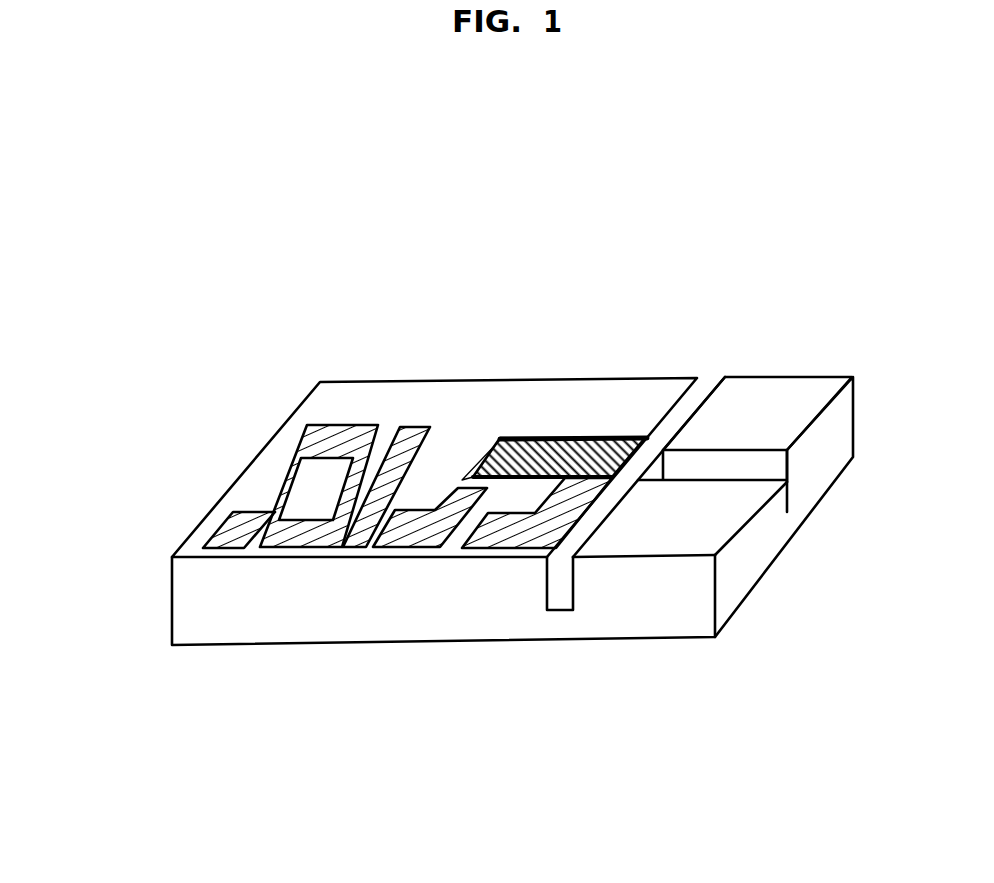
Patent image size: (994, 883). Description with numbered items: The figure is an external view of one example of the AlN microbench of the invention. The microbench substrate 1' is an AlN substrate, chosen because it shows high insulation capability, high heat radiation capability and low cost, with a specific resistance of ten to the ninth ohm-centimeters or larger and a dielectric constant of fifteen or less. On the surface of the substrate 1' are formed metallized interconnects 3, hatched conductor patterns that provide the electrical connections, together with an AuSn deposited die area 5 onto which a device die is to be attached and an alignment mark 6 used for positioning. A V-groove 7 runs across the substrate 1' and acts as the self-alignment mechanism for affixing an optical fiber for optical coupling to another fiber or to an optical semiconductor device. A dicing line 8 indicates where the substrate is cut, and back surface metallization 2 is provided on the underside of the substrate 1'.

The microbench substrate 1' is at (377, 511).
The back surface metallization 2 is at (280, 645).
The metallized interconnects 3 is at (297, 537).
The AuSn deposited die area 5 is at (585, 450).
The alignment mark 6 is at (505, 437).
The V-groove 7 is at (763, 483).
The dicing line 8 is at (560, 603).